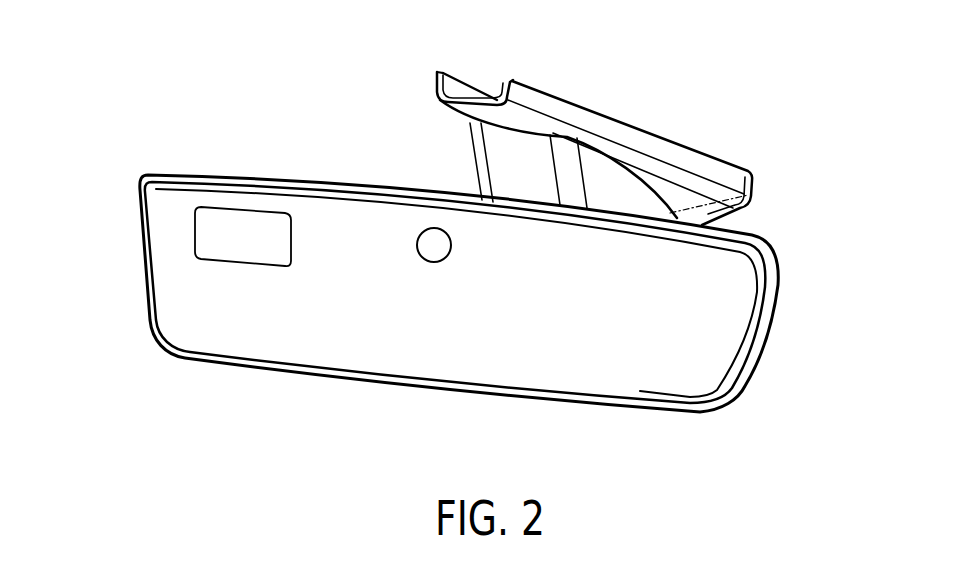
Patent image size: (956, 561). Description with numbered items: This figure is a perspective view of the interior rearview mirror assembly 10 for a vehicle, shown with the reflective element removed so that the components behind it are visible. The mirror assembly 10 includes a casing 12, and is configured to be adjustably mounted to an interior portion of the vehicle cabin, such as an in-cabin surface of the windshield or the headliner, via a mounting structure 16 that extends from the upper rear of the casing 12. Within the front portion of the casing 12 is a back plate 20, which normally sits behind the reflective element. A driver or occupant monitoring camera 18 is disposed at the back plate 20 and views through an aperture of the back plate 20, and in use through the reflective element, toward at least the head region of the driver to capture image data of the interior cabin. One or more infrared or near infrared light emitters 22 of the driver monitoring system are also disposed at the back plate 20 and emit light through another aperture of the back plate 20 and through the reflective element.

The interior rearview mirror assembly 10 is at (778, 115).
The casing 12 is at (752, 385).
The mounting structure 16 is at (570, 112).
The camera 18 is at (424, 248).
The back plate 20 is at (380, 355).
The light emitter 22 is at (223, 228).